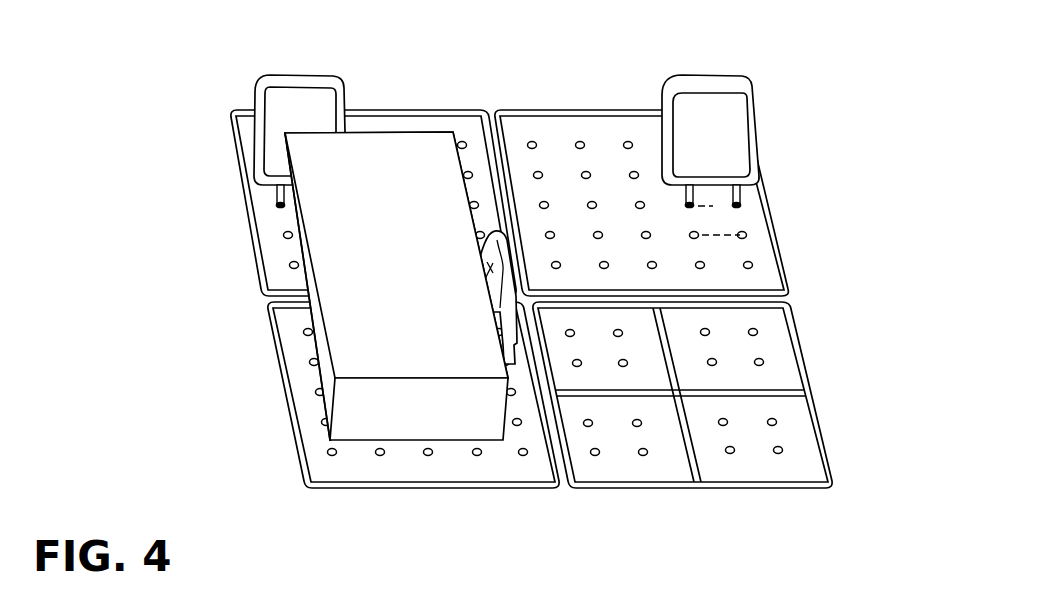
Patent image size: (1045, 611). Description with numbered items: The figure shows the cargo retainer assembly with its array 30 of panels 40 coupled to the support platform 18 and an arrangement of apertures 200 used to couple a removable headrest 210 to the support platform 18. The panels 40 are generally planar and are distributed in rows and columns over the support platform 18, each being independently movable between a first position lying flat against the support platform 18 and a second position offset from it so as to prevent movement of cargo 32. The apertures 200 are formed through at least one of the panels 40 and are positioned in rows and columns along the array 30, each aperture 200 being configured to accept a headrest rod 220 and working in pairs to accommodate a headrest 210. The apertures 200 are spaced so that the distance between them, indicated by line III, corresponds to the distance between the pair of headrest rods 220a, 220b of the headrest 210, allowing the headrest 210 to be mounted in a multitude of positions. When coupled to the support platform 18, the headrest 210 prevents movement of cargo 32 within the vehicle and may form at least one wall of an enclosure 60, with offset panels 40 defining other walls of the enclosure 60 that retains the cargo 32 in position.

The support platform 18 is at (642, 153).
The array 30 is at (572, 249).
The cargo 32 is at (395, 412).
The panels 40 is at (637, 358).
The enclosure 60 is at (349, 341).
The apertures 200 is at (579, 142).
The removable headrest 210 is at (503, 292).
The headrest rod 220 is at (277, 194).
The first headrest rod 220a is at (686, 201).
The second headrest rod 220b is at (740, 200).
The line III is at (762, 214).